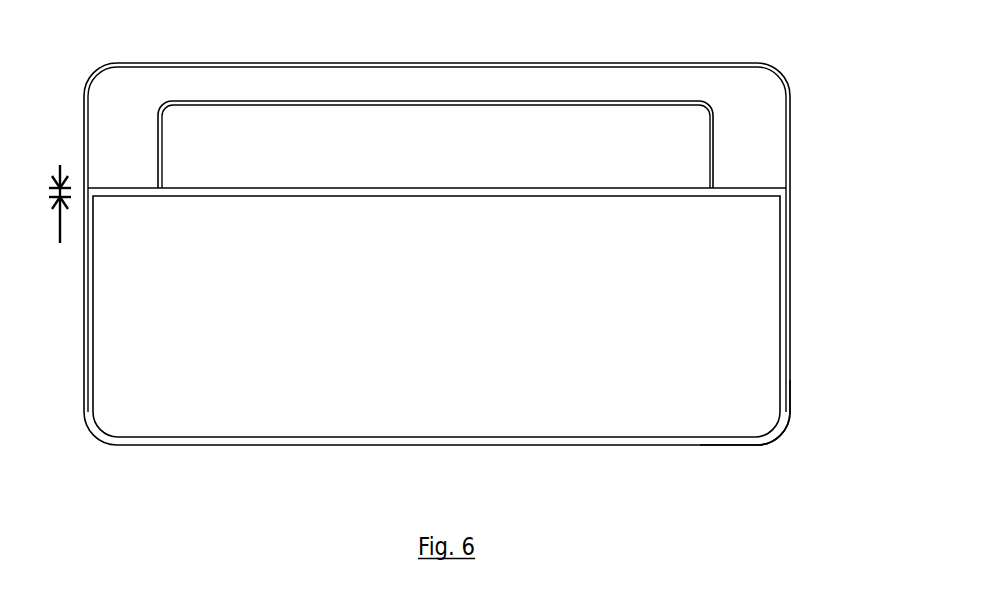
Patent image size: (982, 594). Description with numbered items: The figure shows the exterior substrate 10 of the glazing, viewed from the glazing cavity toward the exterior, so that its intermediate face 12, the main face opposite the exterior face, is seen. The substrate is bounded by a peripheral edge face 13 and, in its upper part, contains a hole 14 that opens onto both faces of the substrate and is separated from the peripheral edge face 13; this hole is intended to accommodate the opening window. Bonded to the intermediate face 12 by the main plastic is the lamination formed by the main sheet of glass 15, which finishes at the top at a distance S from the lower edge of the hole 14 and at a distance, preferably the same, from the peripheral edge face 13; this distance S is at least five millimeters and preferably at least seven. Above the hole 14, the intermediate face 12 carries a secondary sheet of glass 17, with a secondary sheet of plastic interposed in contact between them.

The exterior substrate 10 is at (785, 298).
The intermediate face 12 is at (787, 238).
The peripheral edge face 13 is at (787, 343).
The hole 14 is at (414, 162).
The main sheet of glass 15 is at (424, 311).
The secondary sheet of glass 17 is at (414, 92).
The distance s S is at (50, 204).